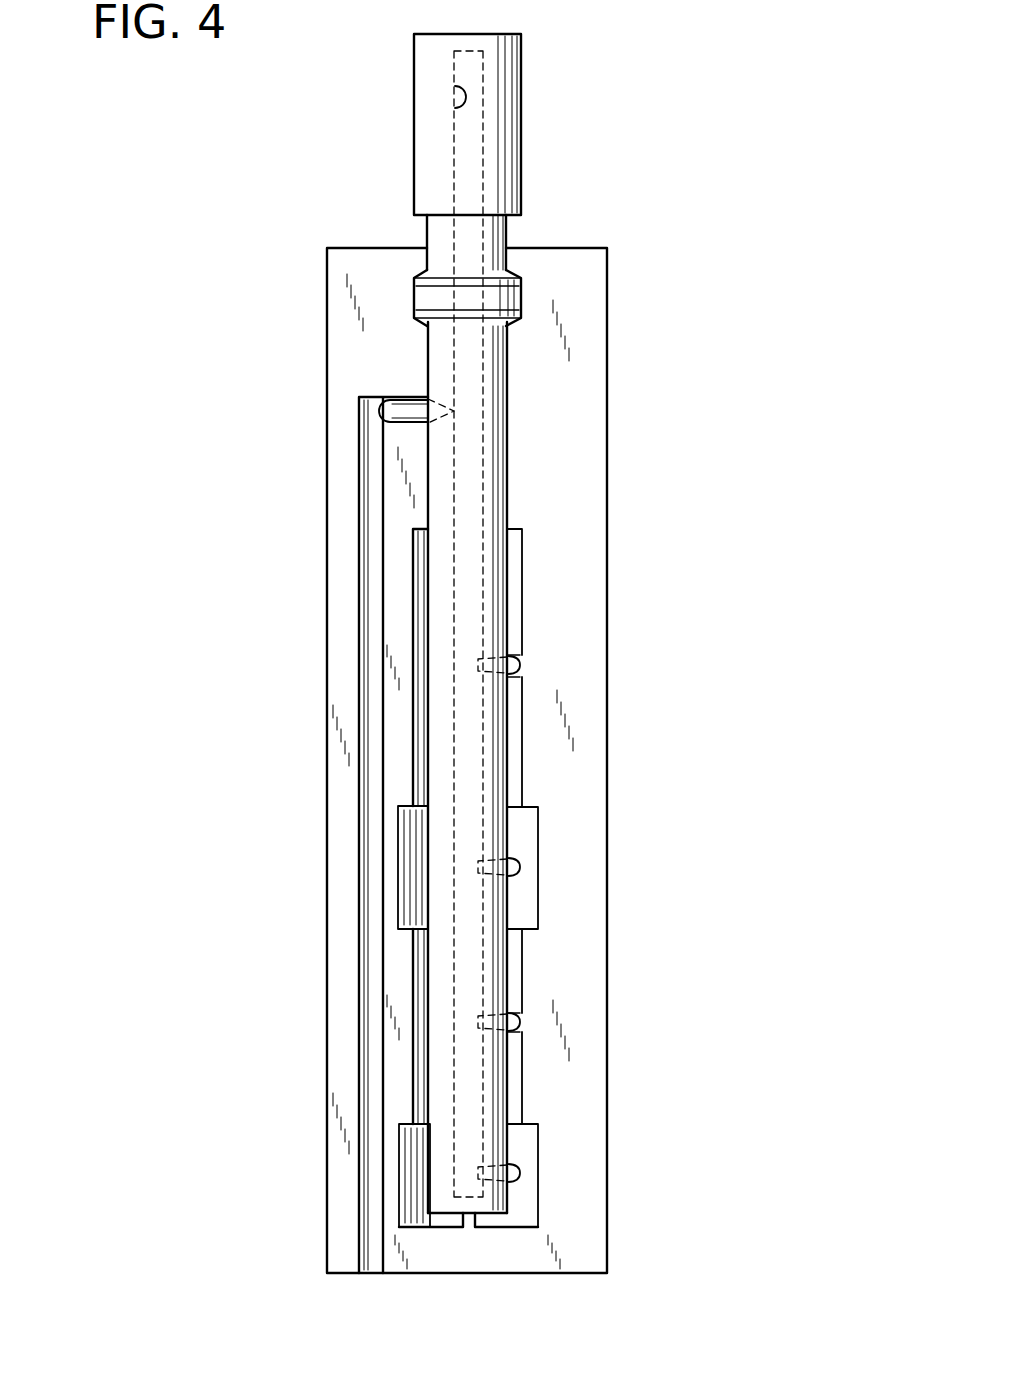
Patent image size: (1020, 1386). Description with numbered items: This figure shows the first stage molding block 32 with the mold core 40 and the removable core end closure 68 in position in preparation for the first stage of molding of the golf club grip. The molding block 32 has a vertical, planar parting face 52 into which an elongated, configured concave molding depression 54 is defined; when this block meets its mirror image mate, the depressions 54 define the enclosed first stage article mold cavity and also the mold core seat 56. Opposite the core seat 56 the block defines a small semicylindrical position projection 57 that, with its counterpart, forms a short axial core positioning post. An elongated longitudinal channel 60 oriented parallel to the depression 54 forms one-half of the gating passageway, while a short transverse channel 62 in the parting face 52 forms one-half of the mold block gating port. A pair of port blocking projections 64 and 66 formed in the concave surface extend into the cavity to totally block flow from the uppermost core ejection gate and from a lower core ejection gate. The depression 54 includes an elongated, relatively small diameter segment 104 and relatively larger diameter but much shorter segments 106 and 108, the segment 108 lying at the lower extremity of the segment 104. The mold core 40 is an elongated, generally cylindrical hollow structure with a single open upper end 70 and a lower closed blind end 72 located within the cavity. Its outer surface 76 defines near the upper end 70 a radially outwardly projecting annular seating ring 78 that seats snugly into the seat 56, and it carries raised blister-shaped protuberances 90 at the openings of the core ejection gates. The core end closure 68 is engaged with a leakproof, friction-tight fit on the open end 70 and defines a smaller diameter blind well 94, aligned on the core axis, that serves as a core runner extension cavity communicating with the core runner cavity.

The first stage molding block 32 is at (622, 630).
The mold core 40 is at (519, 688).
The parting face 52 is at (587, 343).
The molding depression 54 is at (585, 655).
The mold core seat 56 is at (394, 267).
The position projection 57 is at (468, 1222).
The longitudinal channel 60 is at (376, 1010).
The transverse channel 62 is at (407, 410).
The port blocking projection 64 is at (517, 668).
The port blocking projection 66 is at (517, 1022).
The core end closure 68 is at (485, 124).
The open upper end 70 is at (433, 226).
The lower blind end 72 is at (445, 1203).
The outer surface 76 is at (441, 604).
The annular seating ring 78 is at (423, 307).
The protuberance 90 is at (512, 652).
The blind well 94 is at (455, 96).
The smaller diameter segment 104 is at (591, 1026).
The larger diameter segment 106 is at (538, 897).
The larger diameter segment 108 is at (525, 1183).